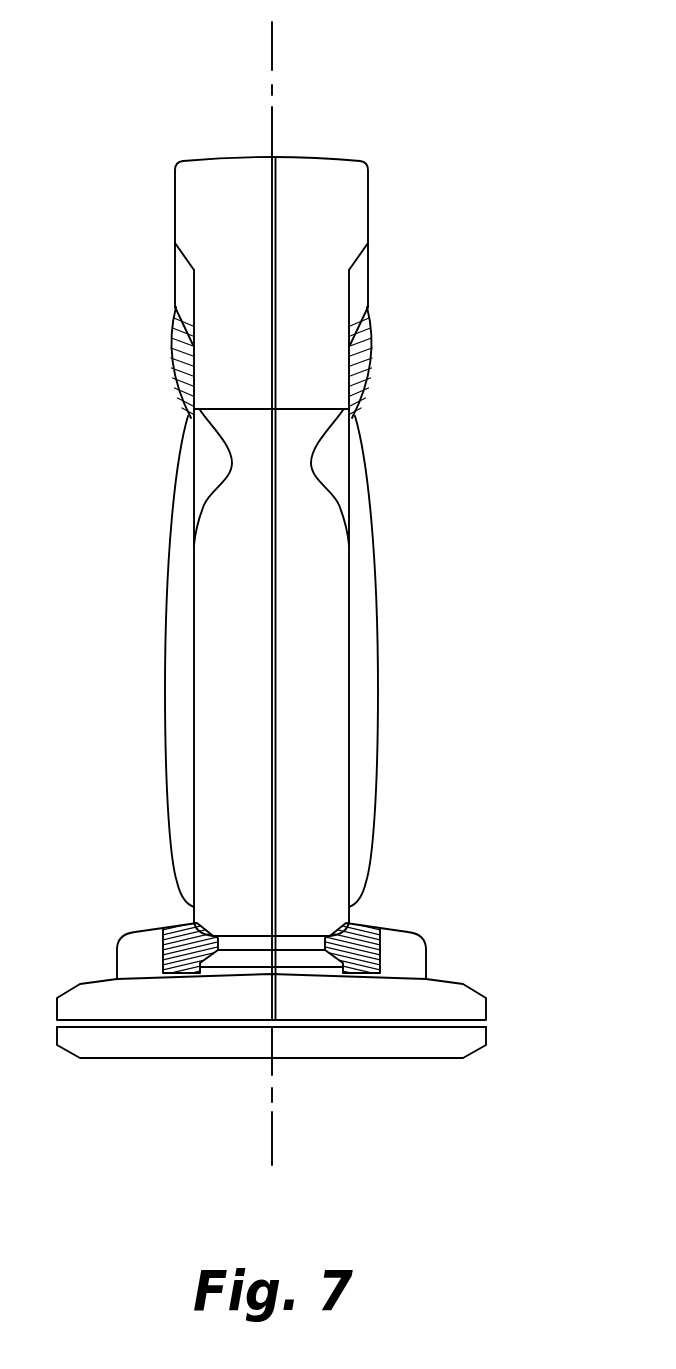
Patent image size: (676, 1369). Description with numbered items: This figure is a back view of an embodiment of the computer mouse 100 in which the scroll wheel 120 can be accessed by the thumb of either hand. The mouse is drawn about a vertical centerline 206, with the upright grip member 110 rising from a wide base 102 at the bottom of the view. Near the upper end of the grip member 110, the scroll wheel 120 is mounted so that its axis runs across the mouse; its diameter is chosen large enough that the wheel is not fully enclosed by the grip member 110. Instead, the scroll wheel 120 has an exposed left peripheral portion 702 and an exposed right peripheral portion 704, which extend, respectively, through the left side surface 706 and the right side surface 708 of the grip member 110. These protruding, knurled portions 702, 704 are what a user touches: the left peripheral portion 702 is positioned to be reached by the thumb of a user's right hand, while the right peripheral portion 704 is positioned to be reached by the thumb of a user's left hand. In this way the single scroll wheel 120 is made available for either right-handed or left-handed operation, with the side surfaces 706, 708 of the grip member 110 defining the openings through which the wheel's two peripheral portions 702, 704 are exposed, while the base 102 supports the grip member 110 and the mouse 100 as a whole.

The computer mouse 100 is at (413, 141).
The base 102 is at (404, 976).
The grip member 110 is at (327, 685).
The scroll wheel 120 is at (368, 333).
The longitudinal axis 206 is at (273, 62).
The left peripheral portion 702 is at (177, 388).
The right peripheral portion 704 is at (367, 387).
The left side surface 706 is at (192, 471).
The right side surface 708 is at (351, 465).